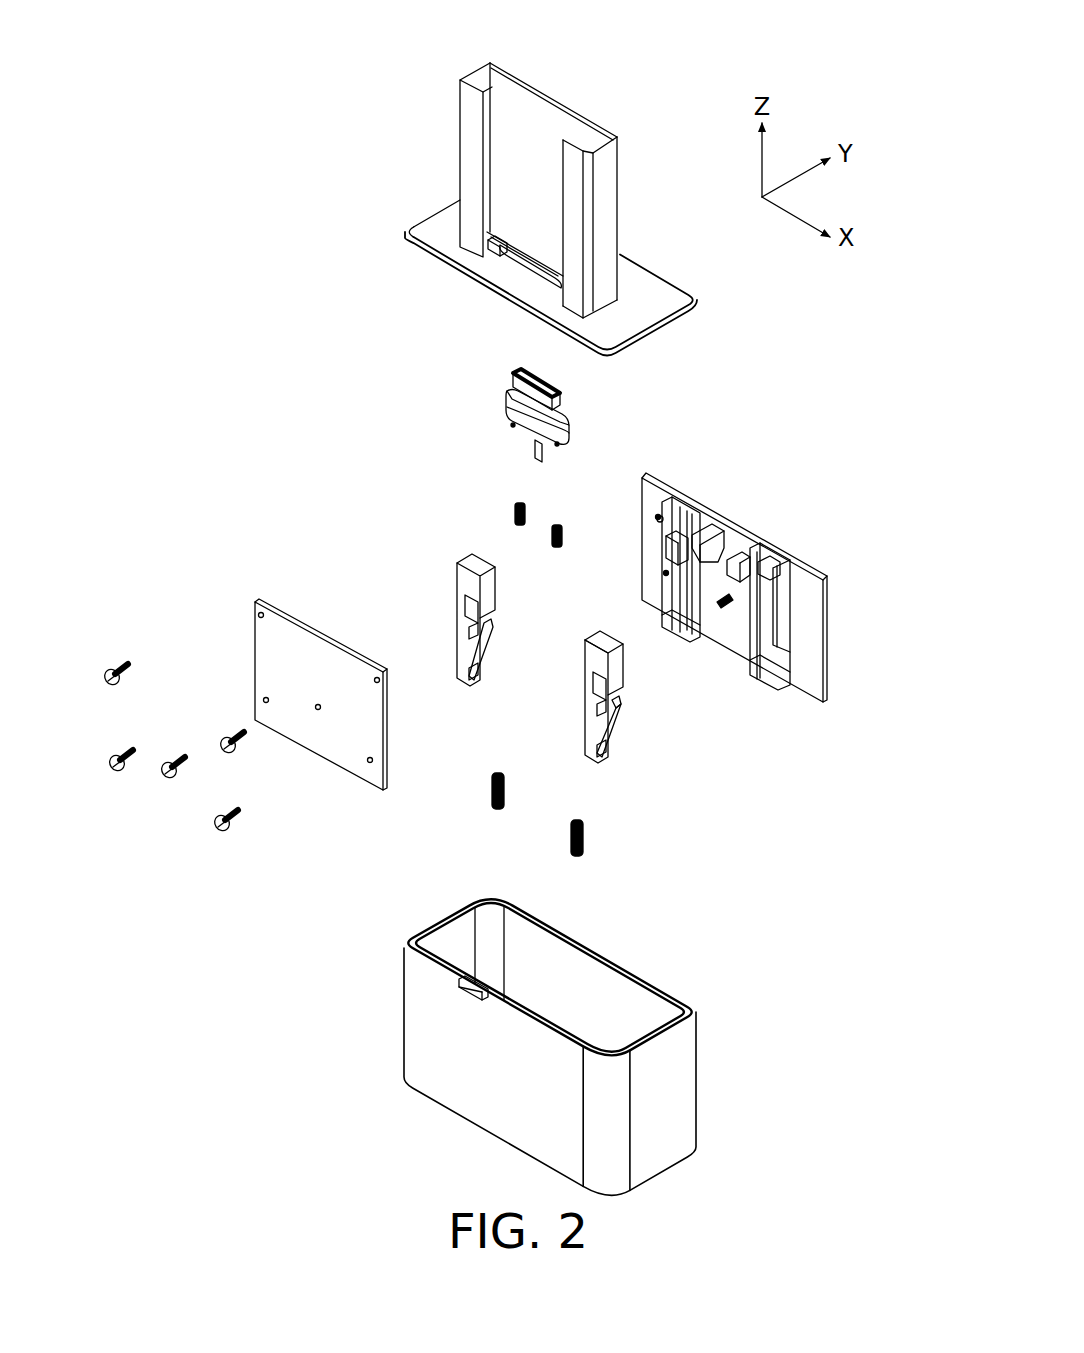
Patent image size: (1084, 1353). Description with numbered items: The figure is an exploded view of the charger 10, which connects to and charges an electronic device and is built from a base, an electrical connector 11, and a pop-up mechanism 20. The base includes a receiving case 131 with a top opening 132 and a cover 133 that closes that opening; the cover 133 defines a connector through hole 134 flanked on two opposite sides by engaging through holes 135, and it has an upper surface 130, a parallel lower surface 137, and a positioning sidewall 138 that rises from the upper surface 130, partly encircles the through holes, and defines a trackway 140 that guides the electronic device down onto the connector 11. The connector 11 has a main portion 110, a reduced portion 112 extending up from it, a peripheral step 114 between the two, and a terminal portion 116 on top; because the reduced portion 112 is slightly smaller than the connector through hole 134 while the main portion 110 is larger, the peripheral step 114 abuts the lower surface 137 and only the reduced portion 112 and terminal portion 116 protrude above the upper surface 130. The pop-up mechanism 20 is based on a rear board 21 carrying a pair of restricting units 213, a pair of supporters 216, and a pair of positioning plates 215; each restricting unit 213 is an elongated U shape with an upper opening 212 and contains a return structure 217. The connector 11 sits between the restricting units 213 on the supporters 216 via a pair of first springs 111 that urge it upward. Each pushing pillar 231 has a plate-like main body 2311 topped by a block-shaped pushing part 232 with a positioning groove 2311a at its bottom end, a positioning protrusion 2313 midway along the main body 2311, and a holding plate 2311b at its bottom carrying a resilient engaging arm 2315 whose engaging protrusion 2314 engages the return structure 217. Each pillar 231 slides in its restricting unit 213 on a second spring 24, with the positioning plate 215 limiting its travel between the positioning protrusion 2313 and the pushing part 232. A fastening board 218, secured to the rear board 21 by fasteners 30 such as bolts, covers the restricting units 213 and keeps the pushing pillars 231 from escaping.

The charger 10 is at (305, 140).
The electrical connector 11 is at (490, 370).
The pop-up mechanism 20 is at (740, 737).
The rear board 21 is at (828, 648).
The second spring 24 is at (592, 838).
The fasteners 30 is at (115, 668).
The main portion 110 is at (530, 425).
The first springs 111 is at (515, 505).
The reduced portion 112 is at (512, 407).
The peripheral step 114 is at (570, 428).
The terminal portion 116 is at (522, 391).
The upper surface 130 is at (432, 226).
The receiving case 131 is at (675, 1086).
The top opening 132 is at (583, 962).
The cover 133 is at (655, 285).
The connector through hole 134 is at (542, 283).
The engaging through holes 135 is at (493, 258).
The lower surface 137 is at (665, 338).
The positioning sidewall 138 is at (607, 181).
The trackway 140 is at (528, 105).
The upper opening 212 is at (684, 506).
The restricting units 213 is at (787, 592).
The positioning plates 215 is at (662, 519).
The supporters 216 is at (707, 518).
The return structures 217 is at (660, 543).
The fastening board 218 is at (310, 650).
The pushing pillars 231 is at (595, 622).
The pushing part 232 is at (600, 660).
The main body 2311 is at (595, 712).
The positioning groove 2311a is at (590, 676).
The holding plate 2311b is at (612, 760).
The positioning protrusion 2313 is at (604, 699).
The engaging protrusion 2314 is at (620, 710).
The engaging arm 2315 is at (615, 735).